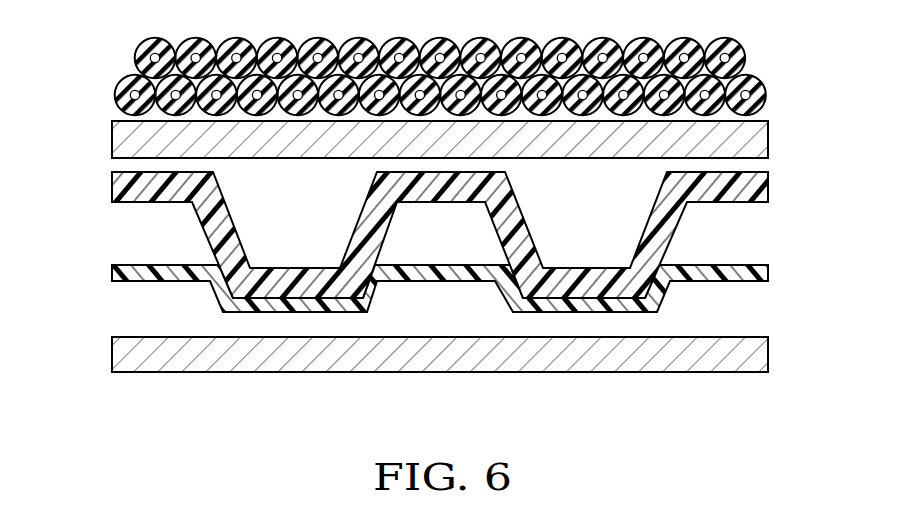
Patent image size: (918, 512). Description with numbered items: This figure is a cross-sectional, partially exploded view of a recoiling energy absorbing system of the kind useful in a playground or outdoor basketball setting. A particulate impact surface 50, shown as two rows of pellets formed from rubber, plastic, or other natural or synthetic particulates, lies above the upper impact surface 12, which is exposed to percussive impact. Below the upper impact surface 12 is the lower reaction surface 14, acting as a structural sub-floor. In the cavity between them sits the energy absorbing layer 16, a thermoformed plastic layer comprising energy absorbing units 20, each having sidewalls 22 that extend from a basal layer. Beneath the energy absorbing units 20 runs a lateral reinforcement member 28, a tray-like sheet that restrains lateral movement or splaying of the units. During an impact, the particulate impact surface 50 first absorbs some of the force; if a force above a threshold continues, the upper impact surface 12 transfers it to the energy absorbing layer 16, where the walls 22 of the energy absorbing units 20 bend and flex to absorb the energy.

The upper impact surface 12 is at (768, 140).
The lower reaction surface 14 is at (111, 356).
The energy absorbing layer 16 is at (464, 240).
The energy absorbing unit 20 is at (525, 382).
The sidewall 22 is at (293, 288).
The lateral reinforcement member 28 is at (166, 264).
The particulate impact surface 50 is at (767, 96).